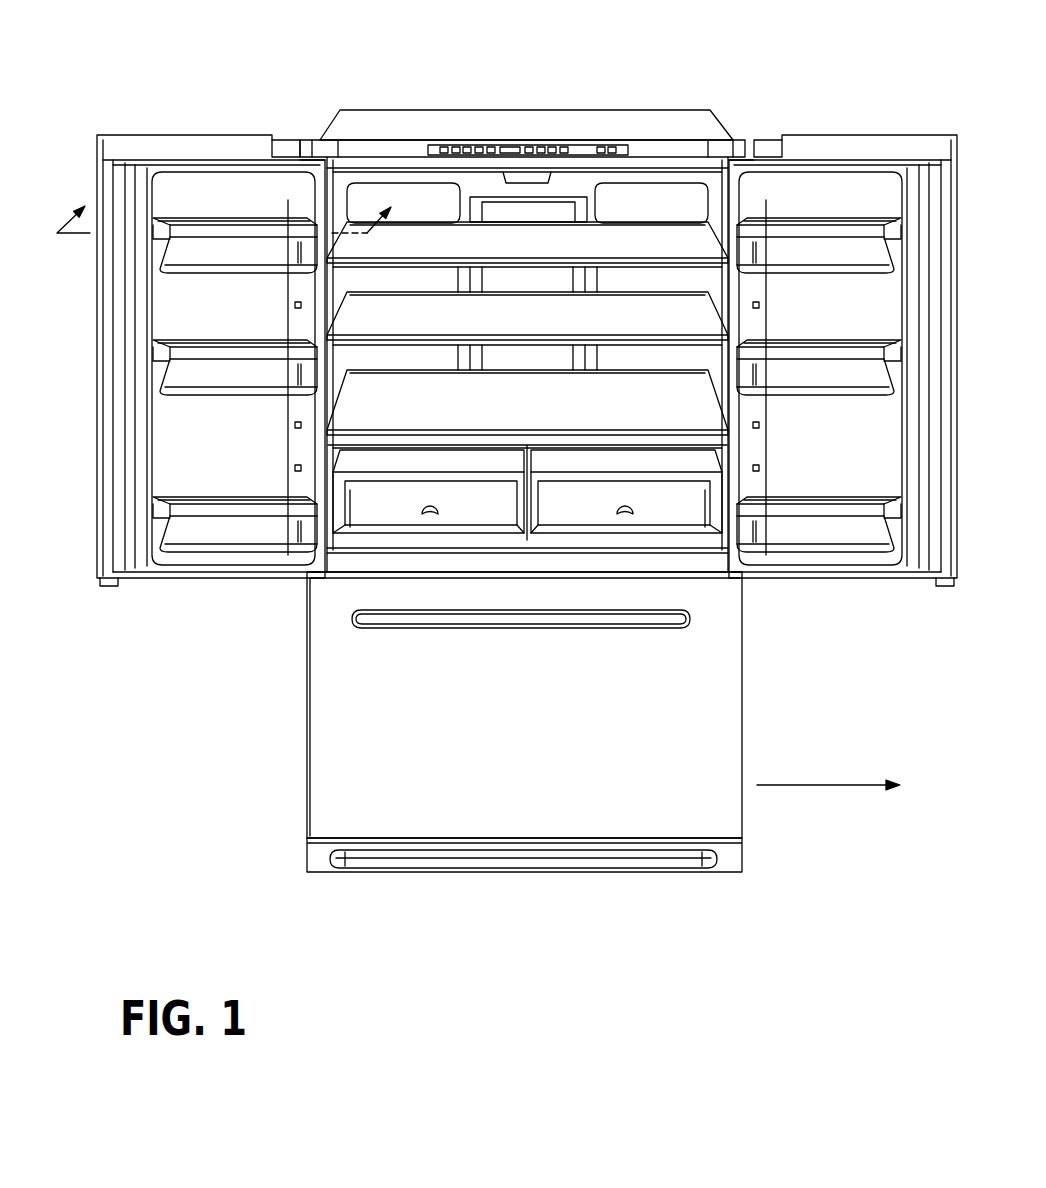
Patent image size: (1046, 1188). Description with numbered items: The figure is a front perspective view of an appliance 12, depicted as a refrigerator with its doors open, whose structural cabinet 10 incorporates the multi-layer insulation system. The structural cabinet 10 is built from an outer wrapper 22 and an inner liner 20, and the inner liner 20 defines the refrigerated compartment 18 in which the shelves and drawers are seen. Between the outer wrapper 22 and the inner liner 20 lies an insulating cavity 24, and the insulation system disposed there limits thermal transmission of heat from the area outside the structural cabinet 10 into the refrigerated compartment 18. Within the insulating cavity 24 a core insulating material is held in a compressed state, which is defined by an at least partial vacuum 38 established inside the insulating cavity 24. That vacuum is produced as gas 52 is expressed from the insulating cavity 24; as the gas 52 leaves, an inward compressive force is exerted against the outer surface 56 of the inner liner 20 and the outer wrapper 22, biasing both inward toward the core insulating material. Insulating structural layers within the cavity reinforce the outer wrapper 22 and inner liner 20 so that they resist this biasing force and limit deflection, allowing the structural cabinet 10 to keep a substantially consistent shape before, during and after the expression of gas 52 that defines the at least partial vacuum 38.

The structural cabinet 10 is at (527, 110).
The appliance 12 is at (460, 90).
The refrigerated compartment 18 is at (432, 458).
The inner liner 20 is at (333, 380).
The outer wrapper 22 is at (362, 125).
The insulating cavity 24 is at (674, 547).
The at least partial vacuum 38 is at (418, 562).
The gas 52 is at (787, 783).
The outer surface 56 is at (575, 128).